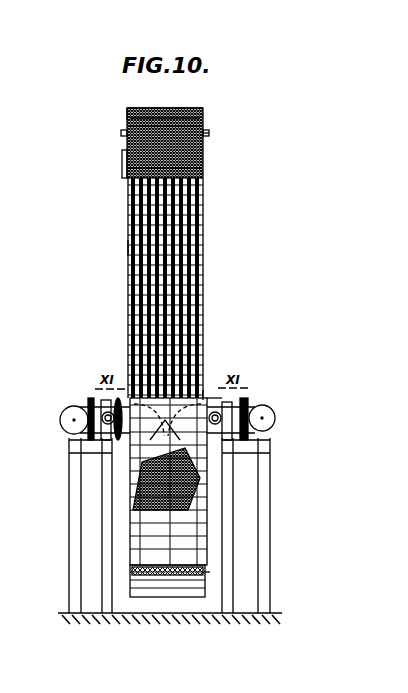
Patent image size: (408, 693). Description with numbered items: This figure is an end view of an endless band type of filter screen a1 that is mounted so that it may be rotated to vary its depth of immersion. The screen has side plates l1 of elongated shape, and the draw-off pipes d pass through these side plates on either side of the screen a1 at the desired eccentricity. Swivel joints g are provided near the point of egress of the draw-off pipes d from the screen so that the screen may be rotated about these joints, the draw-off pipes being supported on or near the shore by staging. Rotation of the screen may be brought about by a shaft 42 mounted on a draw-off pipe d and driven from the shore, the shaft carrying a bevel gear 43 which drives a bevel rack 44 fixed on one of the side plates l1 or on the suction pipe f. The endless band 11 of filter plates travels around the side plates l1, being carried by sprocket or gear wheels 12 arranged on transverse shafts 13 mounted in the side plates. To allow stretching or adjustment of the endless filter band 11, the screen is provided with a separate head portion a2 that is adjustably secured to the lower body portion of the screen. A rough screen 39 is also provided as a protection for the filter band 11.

The endless band of filter plates 11 is at (203, 158).
The sprocket or gear wheels 12 is at (184, 107).
The transverse shafts 13 is at (209, 133).
The rough screen 39 is at (200, 238).
The shaft 42 is at (222, 398).
The bevel gear 43 is at (276, 410).
The bevel rack 44 is at (207, 398).
The screen a1 is at (128, 249).
The head portion a2 is at (128, 111).
The side plates l1 is at (204, 292).
The swivel joints g is at (91, 398).
The draw-off pipes d is at (60, 418).
The suction pipe f is at (202, 491).